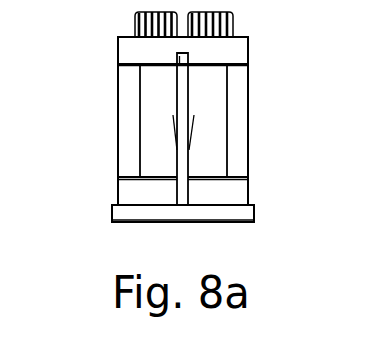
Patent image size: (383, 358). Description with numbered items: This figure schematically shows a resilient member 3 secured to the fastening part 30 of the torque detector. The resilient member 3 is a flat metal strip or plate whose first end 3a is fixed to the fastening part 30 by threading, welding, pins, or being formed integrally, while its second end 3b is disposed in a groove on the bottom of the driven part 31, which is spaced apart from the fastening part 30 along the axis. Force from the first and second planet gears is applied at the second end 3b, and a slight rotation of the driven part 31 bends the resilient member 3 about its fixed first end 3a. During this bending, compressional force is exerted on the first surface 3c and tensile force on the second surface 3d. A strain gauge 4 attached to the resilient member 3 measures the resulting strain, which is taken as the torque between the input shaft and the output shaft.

The driven part 31 is at (128, 48).
The second end 3b is at (190, 57).
The first surface 3c is at (176, 90).
The second surface 3d is at (190, 80).
The resilient member 3 is at (186, 109).
The strain gauge 4 is at (177, 148).
The fastening part 30 is at (137, 191).
The first end 3a is at (178, 198).